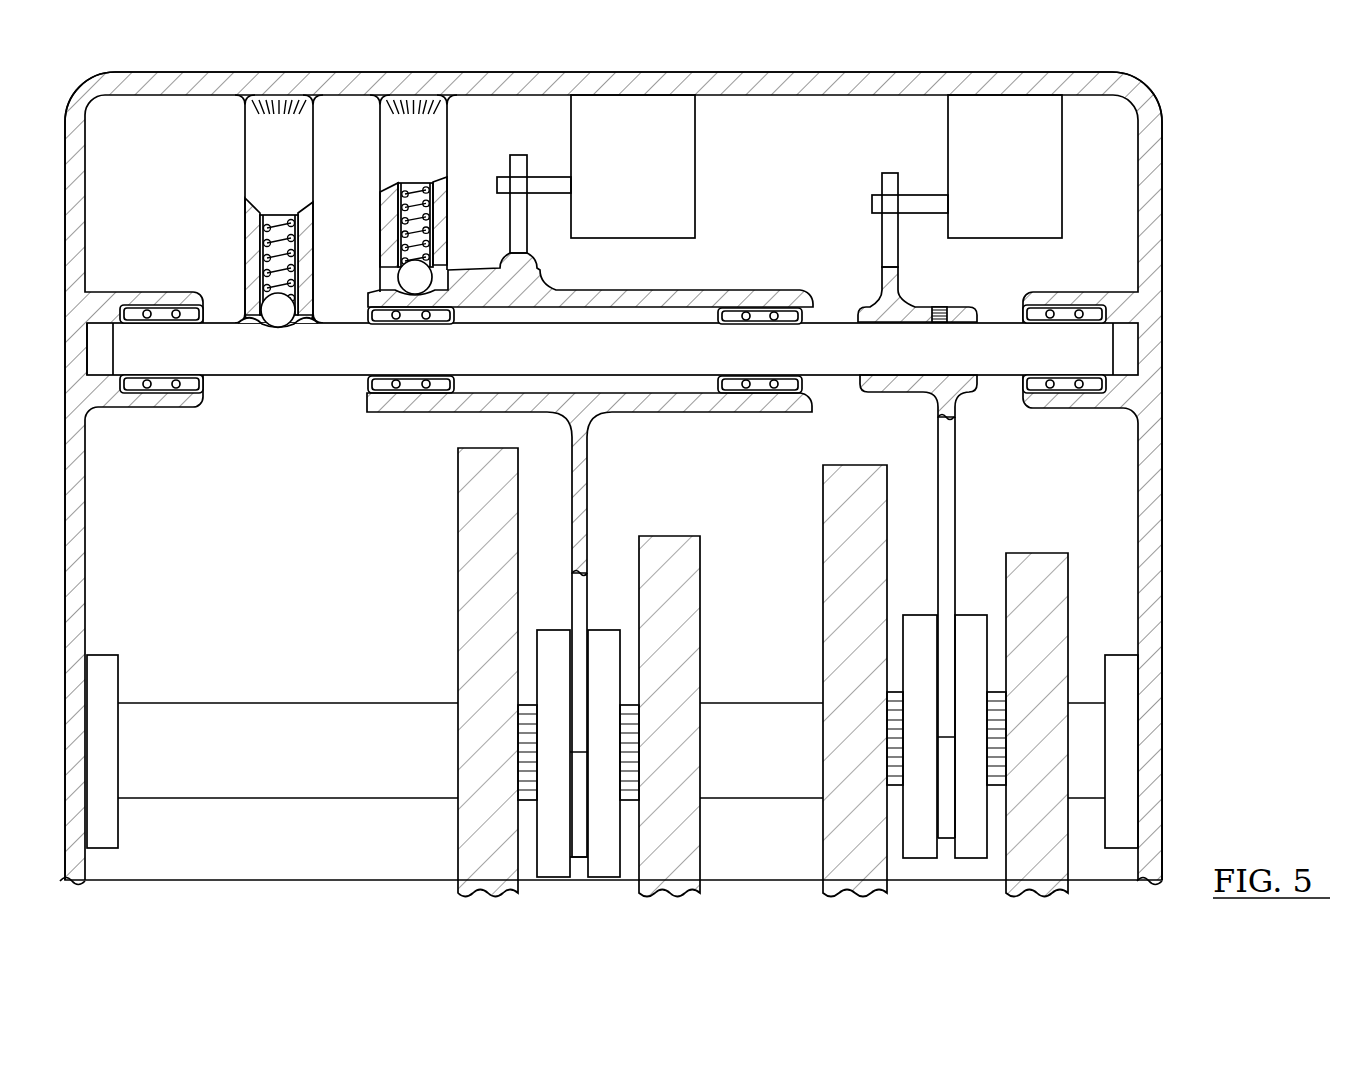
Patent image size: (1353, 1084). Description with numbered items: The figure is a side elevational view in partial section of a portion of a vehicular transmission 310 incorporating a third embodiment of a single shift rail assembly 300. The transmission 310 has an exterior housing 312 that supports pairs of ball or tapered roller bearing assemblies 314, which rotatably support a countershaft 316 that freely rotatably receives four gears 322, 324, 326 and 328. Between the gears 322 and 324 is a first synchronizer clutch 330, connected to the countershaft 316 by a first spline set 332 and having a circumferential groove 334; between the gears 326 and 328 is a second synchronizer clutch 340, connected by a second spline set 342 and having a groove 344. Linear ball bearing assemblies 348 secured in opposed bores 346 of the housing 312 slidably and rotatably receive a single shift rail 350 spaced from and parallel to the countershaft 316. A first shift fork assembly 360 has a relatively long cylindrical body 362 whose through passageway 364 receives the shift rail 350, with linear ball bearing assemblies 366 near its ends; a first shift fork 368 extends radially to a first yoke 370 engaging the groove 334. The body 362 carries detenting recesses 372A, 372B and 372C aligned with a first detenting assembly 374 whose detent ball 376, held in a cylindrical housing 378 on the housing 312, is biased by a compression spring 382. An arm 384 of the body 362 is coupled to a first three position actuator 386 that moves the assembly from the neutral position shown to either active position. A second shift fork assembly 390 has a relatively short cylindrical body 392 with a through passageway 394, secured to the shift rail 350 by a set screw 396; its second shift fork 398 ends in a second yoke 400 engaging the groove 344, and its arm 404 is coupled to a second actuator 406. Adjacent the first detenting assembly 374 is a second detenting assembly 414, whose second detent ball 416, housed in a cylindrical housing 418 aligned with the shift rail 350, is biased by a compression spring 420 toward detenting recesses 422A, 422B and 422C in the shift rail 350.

The single shift rail assembly 300 is at (1188, 109).
The vehicular transmission 310 is at (1204, 202).
The exterior housing 312 is at (1156, 492).
The ball or tapered roller bearing assemblies 314 is at (100, 680).
The countershaft 316 is at (287, 715).
The gear 322 is at (470, 572).
The gear 324 is at (683, 567).
The gear 326 is at (833, 600).
The gear 328 is at (1043, 563).
The first synchronizer clutch 330 is at (602, 902).
The first interengaging male and female spline set 332 is at (530, 703).
The circumferential channel or groove 334 is at (578, 860).
The second synchronizer clutch 340 is at (920, 893).
The second interengaging male and female spline set 342 is at (898, 692).
The circumferential channel or groove 344 is at (945, 840).
The mounting openings or bores 346 is at (98, 365).
The linear ball bearing assemblies 348 is at (158, 312).
The single shift rail 350 is at (655, 395).
The first shift fork assembly 360 is at (724, 210).
The first cylindrical or tubular body 362 is at (560, 278).
The through passageway 364 is at (823, 395).
The linear ball bearing assemblies 366 is at (404, 390).
The first shift fork 368 is at (580, 602).
The first yoke 370 is at (575, 690).
The detenting recess 372A is at (375, 325).
The detenting recess 372B is at (405, 327).
The detenting recess 372C is at (430, 325).
The first detenting assembly 374 is at (466, 107).
The detent ball 376 is at (412, 281).
The cylindrical housing 378 is at (440, 127).
The compression spring 382 is at (413, 185).
The arm or extension 384 is at (513, 220).
The first actuator or operator 386 is at (655, 150).
The second shift fork assembly 390 is at (975, 420).
The second cylindrical or tubular body 392 is at (897, 315).
The through passageway 394 is at (850, 378).
The set screw 396 is at (937, 305).
The second shift fork 398 is at (950, 530).
The second yoke 400 is at (945, 682).
The arm or extension 404 is at (890, 183).
The second actuator or operator 406 is at (1027, 150).
The second detenting assembly 414 is at (234, 100).
The second detent ball 416 is at (270, 312).
The cylindrical housing 418 is at (255, 142).
The compression spring 420 is at (278, 218).
The detenting recess 422A is at (262, 326).
The detenting recess 422B is at (278, 331).
The detenting recess 422C is at (300, 326).